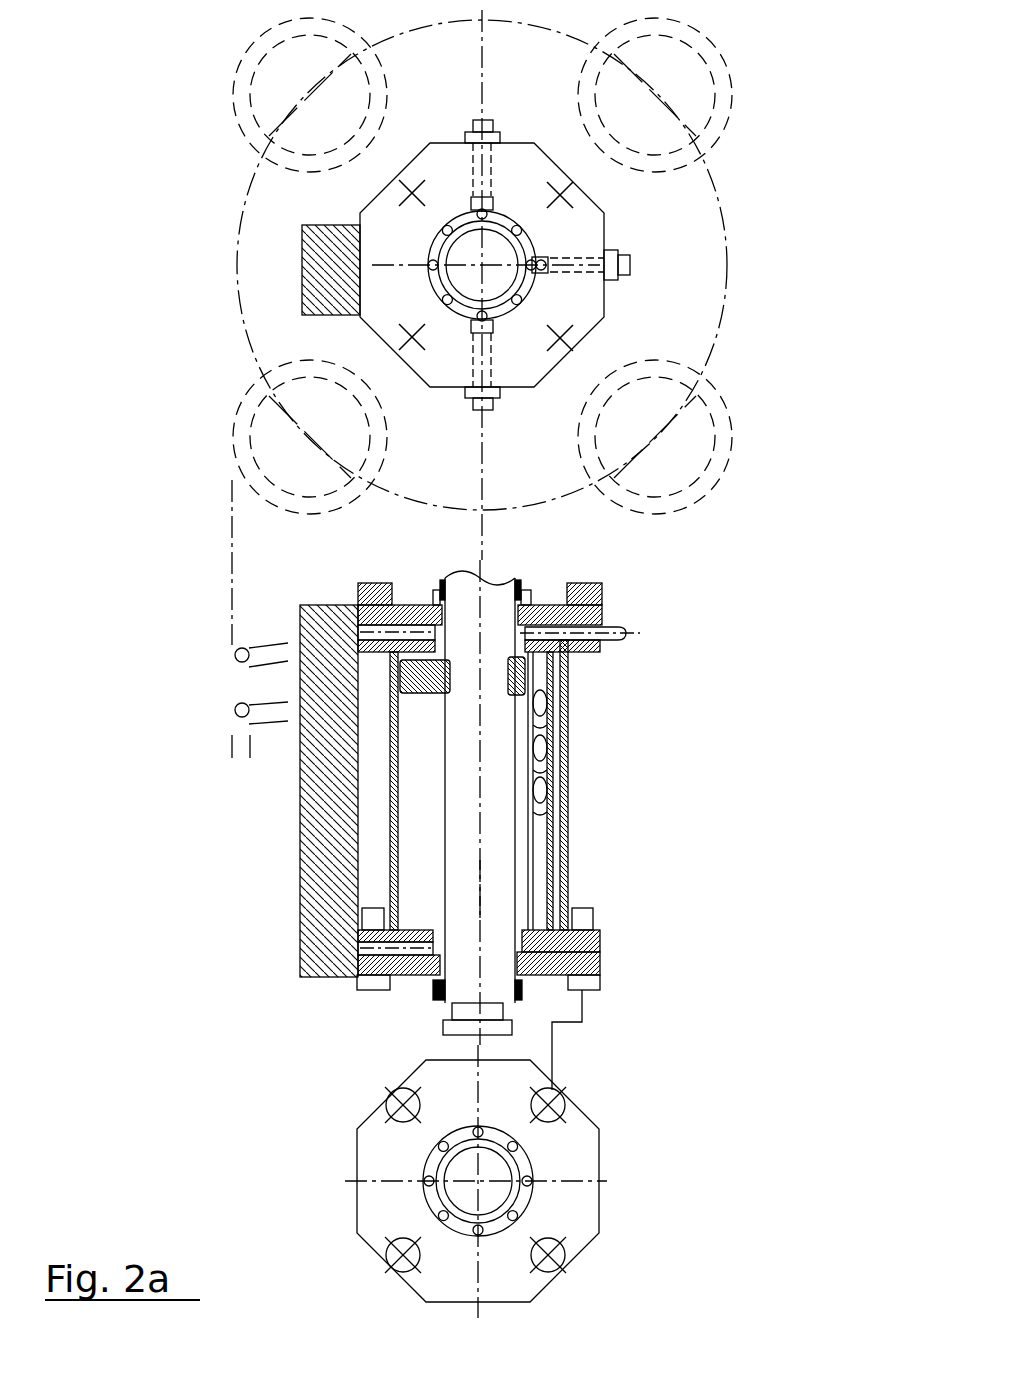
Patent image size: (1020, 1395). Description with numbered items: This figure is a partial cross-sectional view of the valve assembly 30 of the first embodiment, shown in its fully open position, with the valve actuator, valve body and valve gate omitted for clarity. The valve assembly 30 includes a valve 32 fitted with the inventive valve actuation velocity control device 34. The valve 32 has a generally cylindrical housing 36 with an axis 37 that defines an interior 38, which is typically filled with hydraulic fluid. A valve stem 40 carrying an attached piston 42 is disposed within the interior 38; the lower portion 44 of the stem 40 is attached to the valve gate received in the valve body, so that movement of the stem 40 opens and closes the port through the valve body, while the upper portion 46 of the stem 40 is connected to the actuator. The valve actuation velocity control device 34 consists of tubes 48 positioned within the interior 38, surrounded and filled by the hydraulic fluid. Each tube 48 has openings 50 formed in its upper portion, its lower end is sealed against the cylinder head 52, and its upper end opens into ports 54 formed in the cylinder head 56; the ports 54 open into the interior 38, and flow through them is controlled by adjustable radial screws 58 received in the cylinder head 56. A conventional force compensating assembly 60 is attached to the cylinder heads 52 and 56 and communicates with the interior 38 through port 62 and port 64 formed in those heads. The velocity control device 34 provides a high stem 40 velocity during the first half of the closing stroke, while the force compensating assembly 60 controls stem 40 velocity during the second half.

The valve assembly 30 is at (622, 582).
The valve 32 is at (604, 879).
The valve actuation velocity control device 34 is at (574, 753).
The cylindrical housing 36 is at (567, 862).
The axis 37 is at (476, 888).
The interior 38 is at (437, 782).
The valve stem 40 is at (480, 748).
The piston 42 is at (425, 706).
The lower portion 44 is at (412, 1004).
The upper portion 46 is at (526, 560).
The tubes 48 is at (492, 210).
The openings 50 is at (542, 712).
The cylinder head 52 is at (598, 958).
The ports 54 is at (538, 625).
The cylinder head 56 is at (603, 233).
The adjustable radial screws 58 is at (490, 122).
The force compensating assembly 60 is at (302, 290).
The port 62 is at (405, 982).
The port 64 is at (418, 630).